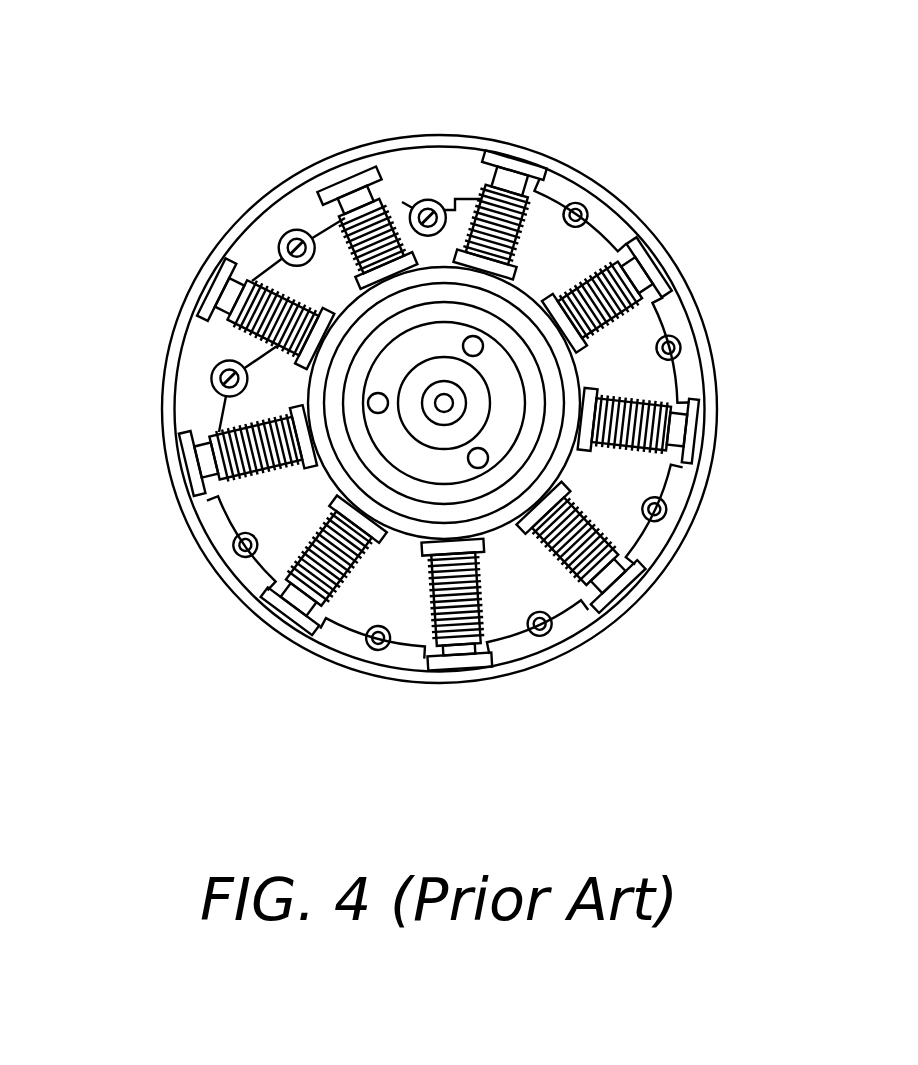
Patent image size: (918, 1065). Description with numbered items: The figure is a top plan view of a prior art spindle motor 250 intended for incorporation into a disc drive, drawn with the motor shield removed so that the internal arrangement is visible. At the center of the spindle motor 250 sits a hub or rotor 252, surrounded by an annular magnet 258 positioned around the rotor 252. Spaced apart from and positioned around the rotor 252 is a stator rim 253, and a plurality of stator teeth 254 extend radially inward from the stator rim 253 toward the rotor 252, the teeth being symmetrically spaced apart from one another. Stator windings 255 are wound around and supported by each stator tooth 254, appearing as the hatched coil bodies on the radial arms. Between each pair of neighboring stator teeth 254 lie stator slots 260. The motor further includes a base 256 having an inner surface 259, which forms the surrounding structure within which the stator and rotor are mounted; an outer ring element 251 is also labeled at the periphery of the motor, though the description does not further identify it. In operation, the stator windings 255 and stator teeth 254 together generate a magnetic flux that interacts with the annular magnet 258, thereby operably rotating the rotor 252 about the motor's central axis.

The spindle motor 250 is at (712, 120).
The inner housing ring 251 is at (683, 505).
The hub or rotor 252 is at (523, 453).
The stator rim 253 is at (697, 427).
The stator teeth 254 is at (487, 600).
The stator windings 255 is at (457, 610).
The base 256 is at (640, 350).
The annular magnet 258 is at (307, 378).
The inner surface 259 is at (540, 215).
The stator slots 260 is at (365, 570).